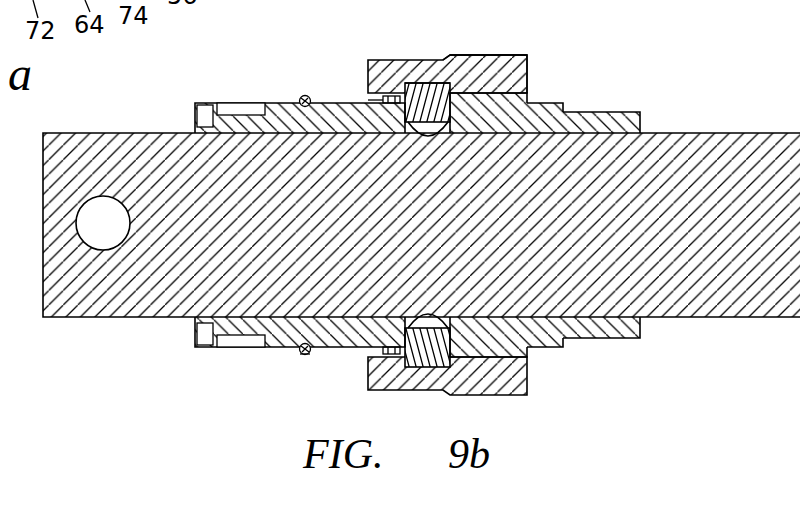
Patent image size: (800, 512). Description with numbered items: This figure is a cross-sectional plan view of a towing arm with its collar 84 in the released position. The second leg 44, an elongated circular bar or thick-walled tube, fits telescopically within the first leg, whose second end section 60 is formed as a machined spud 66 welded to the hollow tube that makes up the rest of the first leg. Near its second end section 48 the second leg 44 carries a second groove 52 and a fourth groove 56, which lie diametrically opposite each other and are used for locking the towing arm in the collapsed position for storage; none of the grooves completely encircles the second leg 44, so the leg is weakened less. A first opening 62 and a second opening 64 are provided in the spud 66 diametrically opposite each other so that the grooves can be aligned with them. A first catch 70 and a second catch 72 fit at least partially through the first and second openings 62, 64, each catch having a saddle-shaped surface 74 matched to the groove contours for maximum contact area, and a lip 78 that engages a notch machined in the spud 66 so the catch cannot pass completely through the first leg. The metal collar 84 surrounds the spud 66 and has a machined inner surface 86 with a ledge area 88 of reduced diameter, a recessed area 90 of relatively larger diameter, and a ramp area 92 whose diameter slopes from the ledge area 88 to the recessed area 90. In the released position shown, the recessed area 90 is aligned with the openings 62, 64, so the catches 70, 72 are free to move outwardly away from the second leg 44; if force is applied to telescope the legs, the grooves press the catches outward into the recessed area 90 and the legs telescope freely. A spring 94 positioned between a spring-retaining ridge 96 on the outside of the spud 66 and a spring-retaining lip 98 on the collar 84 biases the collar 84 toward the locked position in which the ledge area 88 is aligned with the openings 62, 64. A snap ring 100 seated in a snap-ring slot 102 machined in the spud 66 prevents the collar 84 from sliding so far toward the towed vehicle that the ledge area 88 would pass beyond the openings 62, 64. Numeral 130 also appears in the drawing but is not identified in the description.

The second leg 44 is at (733, 133).
The second end section 48 is at (117, 310).
The second groove 52 is at (655, 133).
The fourth groove 56 is at (443, 317).
The second end section 60 is at (640, 116).
The first opening 62 is at (455, 133).
The second opening 64 is at (563, 342).
The spud 66 is at (292, 102).
The first catch 70 is at (456, 65).
The second catch 72 is at (412, 367).
The saddle-shaped surface 74 is at (309, 96).
The lip 78 is at (384, 95).
The collar 84 is at (522, 58).
The inner surface 86 is at (452, 128).
The ledge area 88 is at (496, 66).
The recessed area 90 is at (410, 62).
The ramp area 92 is at (487, 66).
The spring 94 is at (397, 127).
The spring-retaining ridge 96 is at (372, 380).
The spring-retaining lip 98 is at (381, 352).
The snap ring 100 is at (307, 356).
The snap-ring slot 102 is at (298, 347).
The recess 130 is at (240, 343).